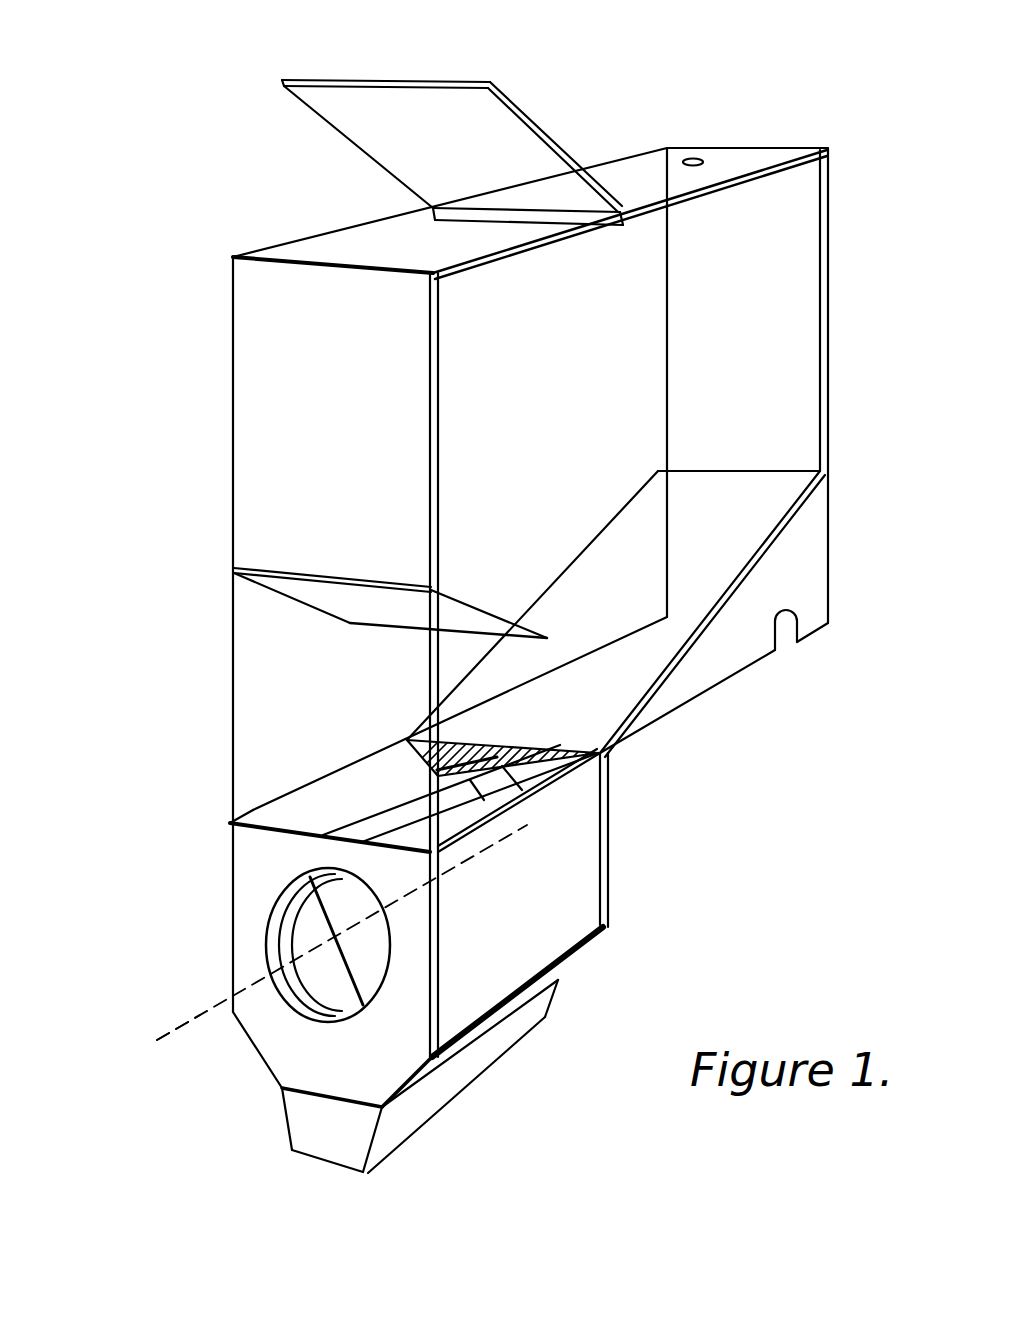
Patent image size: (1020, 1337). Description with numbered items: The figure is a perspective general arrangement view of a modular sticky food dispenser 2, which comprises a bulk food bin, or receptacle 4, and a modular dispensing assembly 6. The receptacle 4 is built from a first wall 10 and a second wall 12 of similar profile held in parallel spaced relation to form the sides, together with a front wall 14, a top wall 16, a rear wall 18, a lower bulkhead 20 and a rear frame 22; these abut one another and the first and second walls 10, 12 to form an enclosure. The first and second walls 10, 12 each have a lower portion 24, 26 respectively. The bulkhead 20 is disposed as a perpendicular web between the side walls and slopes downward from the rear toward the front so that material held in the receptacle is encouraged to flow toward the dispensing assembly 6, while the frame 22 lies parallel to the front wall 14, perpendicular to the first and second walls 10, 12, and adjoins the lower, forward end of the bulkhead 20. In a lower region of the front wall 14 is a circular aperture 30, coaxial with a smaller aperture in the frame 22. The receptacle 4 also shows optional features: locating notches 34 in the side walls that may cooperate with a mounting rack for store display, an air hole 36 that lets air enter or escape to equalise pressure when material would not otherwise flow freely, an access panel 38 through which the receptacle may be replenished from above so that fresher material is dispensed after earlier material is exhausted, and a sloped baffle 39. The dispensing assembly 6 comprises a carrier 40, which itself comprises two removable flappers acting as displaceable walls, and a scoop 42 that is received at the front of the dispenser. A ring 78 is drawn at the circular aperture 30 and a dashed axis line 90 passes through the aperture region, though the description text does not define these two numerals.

The modular sticky food dispenser 2 is at (798, 775).
The receptacle 4 is at (148, 685).
The modular dispensing assembly 6 is at (148, 1020).
The first wall 10 is at (785, 337).
The second wall 12 is at (228, 540).
The front wall 14 is at (303, 673).
The top wall 16 is at (730, 145).
The rear wall 18 is at (832, 272).
The lower bulkhead 20 is at (727, 525).
The rear frame 22 is at (614, 880).
The lower portion 24 is at (560, 828).
The lower portion 26 is at (220, 852).
The circular aperture 30 is at (325, 860).
The locating notches 34 is at (787, 652).
The air hole 36 is at (693, 148).
The access panel 38 is at (400, 60).
The sloped baffle 39 is at (355, 598).
The carrier 40 is at (422, 1093).
The scoop 42 is at (305, 924).
The bushing ring 78 is at (275, 912).
The axis line 90 is at (172, 1038).